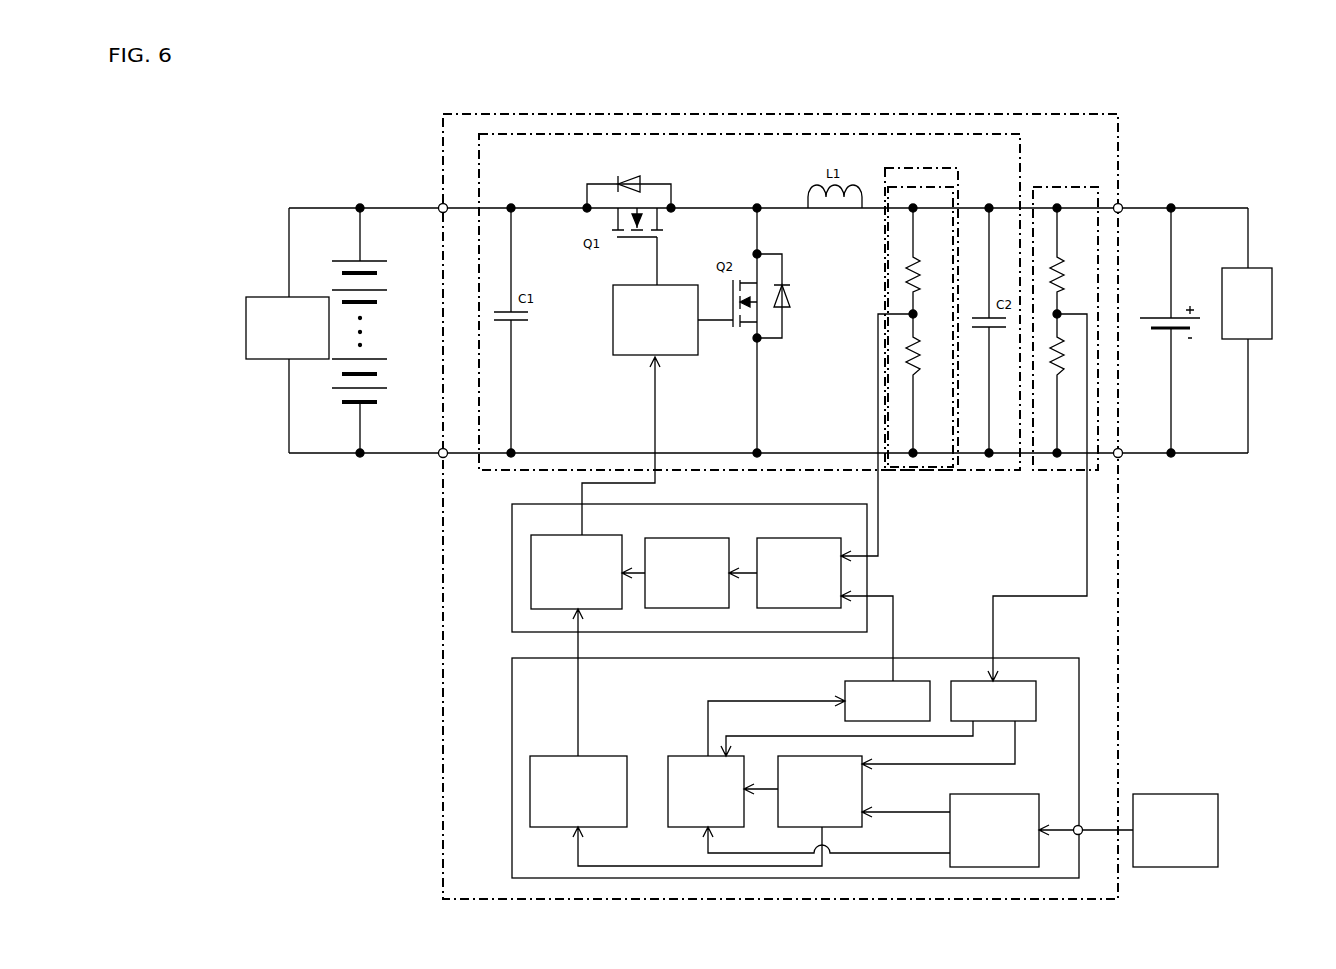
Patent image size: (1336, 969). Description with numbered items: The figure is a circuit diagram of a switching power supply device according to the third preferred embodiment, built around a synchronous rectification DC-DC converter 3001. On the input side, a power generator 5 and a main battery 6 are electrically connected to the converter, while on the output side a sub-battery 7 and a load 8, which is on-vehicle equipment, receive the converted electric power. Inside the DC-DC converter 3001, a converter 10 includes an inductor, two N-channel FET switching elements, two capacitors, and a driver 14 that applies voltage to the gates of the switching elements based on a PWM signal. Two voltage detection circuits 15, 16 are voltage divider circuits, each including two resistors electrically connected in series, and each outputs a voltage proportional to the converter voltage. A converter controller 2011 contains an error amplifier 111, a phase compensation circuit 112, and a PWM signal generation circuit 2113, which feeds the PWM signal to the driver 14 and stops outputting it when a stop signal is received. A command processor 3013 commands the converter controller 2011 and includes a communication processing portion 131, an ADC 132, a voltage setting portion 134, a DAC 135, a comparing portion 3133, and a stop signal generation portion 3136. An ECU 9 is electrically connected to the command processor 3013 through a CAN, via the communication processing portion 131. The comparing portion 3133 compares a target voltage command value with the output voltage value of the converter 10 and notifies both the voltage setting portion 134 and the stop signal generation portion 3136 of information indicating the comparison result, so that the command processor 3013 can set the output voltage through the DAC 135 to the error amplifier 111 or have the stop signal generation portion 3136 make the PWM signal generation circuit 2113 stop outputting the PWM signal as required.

The power generator 5 is at (289, 297).
The main battery 6 is at (372, 261).
The sub-battery 7 is at (1146, 316).
The load 8 is at (1265, 268).
The ECU 9 is at (1192, 794).
The converter 10 is at (1020, 160).
The driver 14 is at (627, 357).
The voltage detection circuit 15 is at (920, 474).
The voltage detection circuit 16 is at (1050, 474).
The error amplifier 111 is at (805, 538).
The phase compensation circuit 112 is at (651, 611).
The communication processing portion 131 is at (1018, 794).
The ADC 132 is at (1022, 681).
The voltage setting portion 134 is at (680, 756).
The DAC 135 is at (912, 681).
The converter controller 2011 is at (512, 532).
The PWM signal generation circuit 2113 is at (531, 592).
The DC-DC converter 3001 is at (1118, 162).
The command processor 3013 is at (512, 745).
The comparing portion 3133 is at (862, 826).
The stop signal generation portion 3136 is at (605, 756).